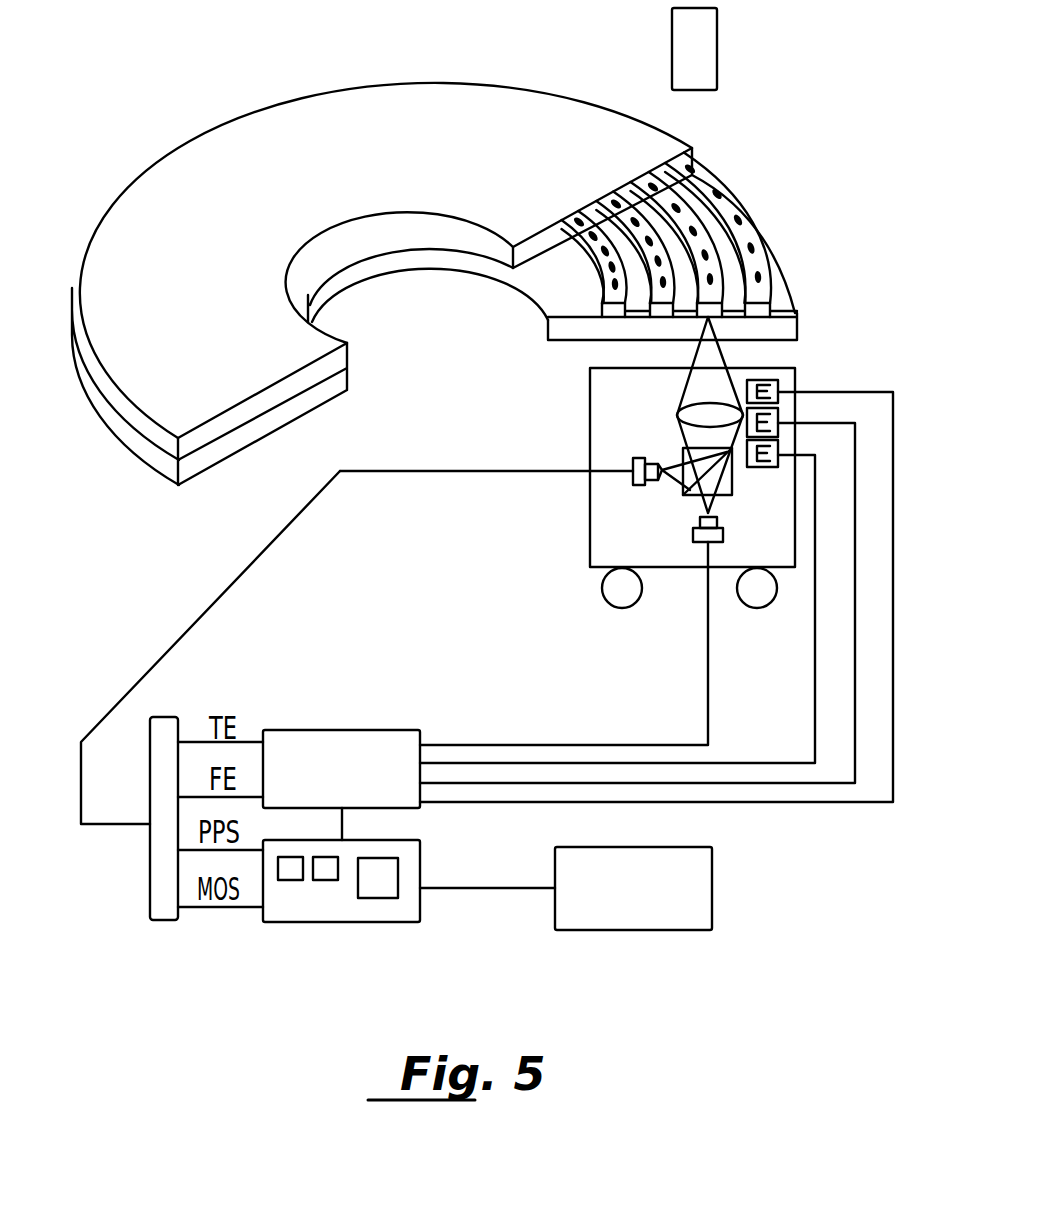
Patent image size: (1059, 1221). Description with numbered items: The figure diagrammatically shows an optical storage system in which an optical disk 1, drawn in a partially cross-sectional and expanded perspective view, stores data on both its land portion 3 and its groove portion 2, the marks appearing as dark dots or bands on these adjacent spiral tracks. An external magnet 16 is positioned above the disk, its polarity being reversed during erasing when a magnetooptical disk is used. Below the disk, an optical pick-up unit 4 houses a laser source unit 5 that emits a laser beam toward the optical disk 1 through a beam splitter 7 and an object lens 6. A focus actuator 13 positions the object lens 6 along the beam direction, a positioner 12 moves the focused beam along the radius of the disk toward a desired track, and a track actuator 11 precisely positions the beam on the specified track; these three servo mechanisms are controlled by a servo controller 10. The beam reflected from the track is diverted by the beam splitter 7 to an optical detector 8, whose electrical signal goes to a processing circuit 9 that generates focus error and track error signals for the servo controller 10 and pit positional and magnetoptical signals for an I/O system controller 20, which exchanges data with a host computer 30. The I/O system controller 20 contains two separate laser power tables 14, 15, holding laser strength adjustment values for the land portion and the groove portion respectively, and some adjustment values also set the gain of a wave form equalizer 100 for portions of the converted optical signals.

The optical disk 1 is at (433, 108).
The groove portion 2 is at (685, 212).
The land portion 3 is at (730, 223).
The optical pick-up unit 4 is at (605, 410).
The laser source unit 5 is at (715, 523).
The object lens 6 is at (690, 418).
The beam splitter 7 is at (725, 478).
The optical detector 8 is at (640, 488).
The processing circuit 9 is at (165, 730).
The servo controller 10 is at (338, 738).
The track actuator 11 is at (778, 412).
The positioner 12 is at (778, 450).
The focus actuator 13 is at (780, 385).
The laser power table 14 is at (292, 880).
The laser power table 15 is at (330, 880).
The external magnet 16 is at (717, 42).
The I/O system controller 20 is at (365, 902).
The host computer 30 is at (620, 915).
The wave form equalizer 100 is at (388, 873).